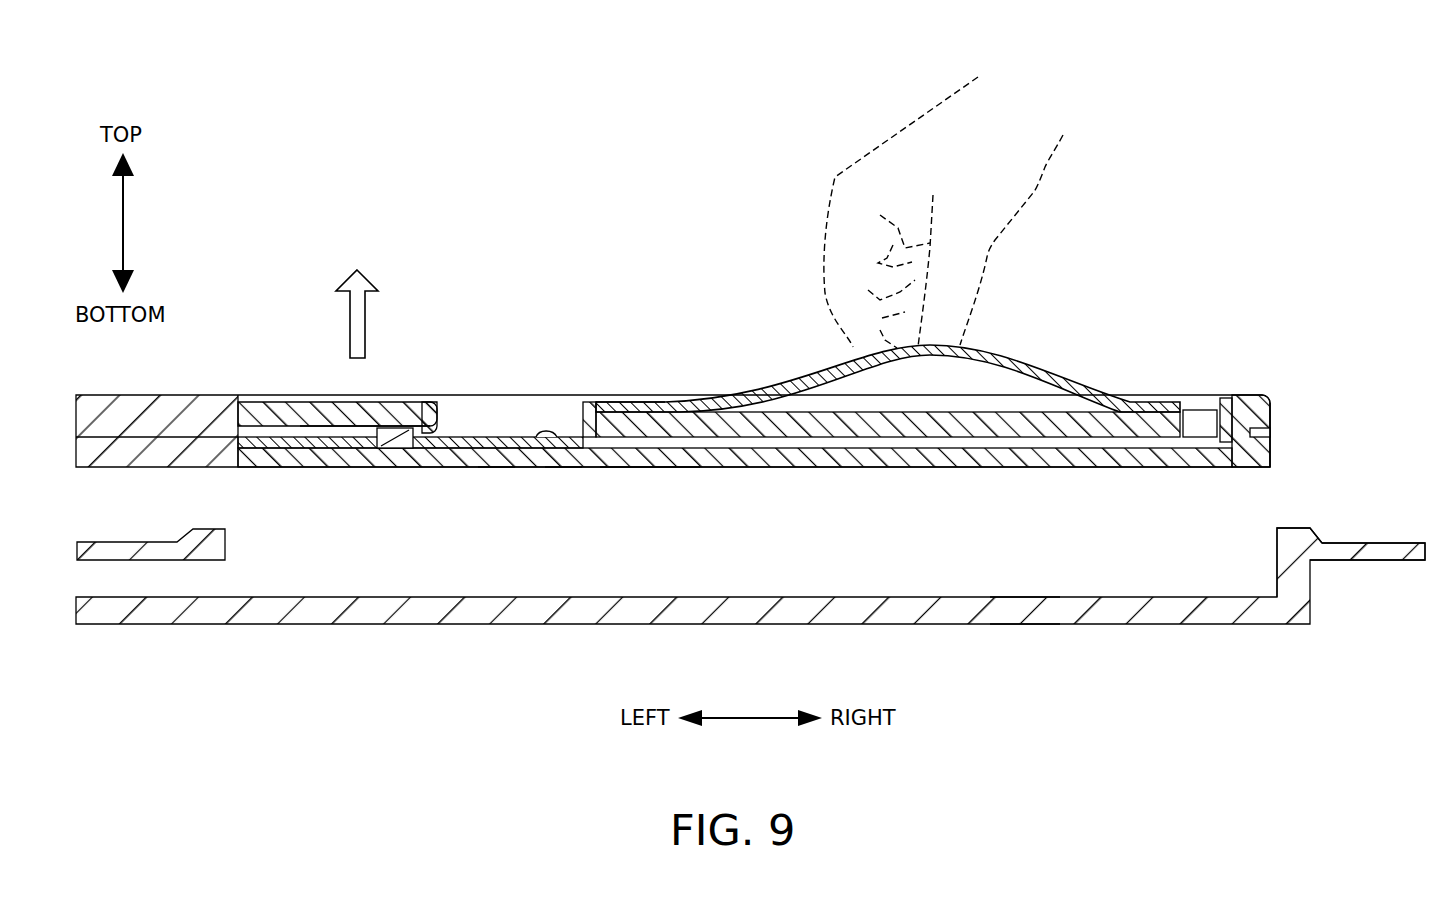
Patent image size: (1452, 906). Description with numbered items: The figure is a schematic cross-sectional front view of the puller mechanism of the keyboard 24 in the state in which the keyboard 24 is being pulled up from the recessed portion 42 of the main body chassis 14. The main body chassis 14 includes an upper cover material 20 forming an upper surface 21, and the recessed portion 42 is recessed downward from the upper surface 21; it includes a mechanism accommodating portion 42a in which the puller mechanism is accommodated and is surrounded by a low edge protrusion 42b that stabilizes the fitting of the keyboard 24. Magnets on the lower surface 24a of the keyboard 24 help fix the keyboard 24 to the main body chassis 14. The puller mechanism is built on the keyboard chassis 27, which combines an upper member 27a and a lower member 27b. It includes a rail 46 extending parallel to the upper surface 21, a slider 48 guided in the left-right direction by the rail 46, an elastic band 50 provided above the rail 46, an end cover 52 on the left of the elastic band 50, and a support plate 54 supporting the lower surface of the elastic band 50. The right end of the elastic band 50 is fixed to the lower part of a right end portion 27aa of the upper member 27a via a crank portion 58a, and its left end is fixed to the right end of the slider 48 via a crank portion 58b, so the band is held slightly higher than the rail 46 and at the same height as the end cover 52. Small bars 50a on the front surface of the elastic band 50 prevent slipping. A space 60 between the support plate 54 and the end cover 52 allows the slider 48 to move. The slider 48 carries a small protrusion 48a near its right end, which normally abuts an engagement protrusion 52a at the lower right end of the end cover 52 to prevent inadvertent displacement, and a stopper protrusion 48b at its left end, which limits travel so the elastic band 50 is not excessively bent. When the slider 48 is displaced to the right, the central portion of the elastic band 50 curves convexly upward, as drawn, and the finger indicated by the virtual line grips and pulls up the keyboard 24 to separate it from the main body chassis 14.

The main body chassis 14 is at (1360, 457).
The upper cover material 20 is at (1427, 543).
The upper surface 21 is at (1368, 543).
The keyboard 24 is at (676, 379).
The lower surface of the keyboard 24a is at (147, 472).
The keyboard chassis 27 is at (524, 531).
The upper member 27a is at (560, 467).
The lower member 27b is at (497, 467).
The right end portion of the upper member 27aa is at (1241, 397).
The recessed portion 42 is at (750, 568).
The mechanism accommodating portion 42a is at (1062, 600).
The edge protrusion 42b is at (1283, 527).
The rail 46 is at (712, 467).
The slider 48 is at (410, 485).
The protrusion 48a is at (541, 468).
The stopper protrusion 48b is at (394, 467).
The elastic band 50 is at (888, 351).
The bars 50a is at (642, 400).
The end cover 52 is at (343, 379).
The engagement protrusion 52a is at (421, 428).
The support plate 54 is at (892, 382).
The crank portion 58a is at (1201, 397).
The crank portion 58b is at (576, 420).
The space 60 is at (503, 420).